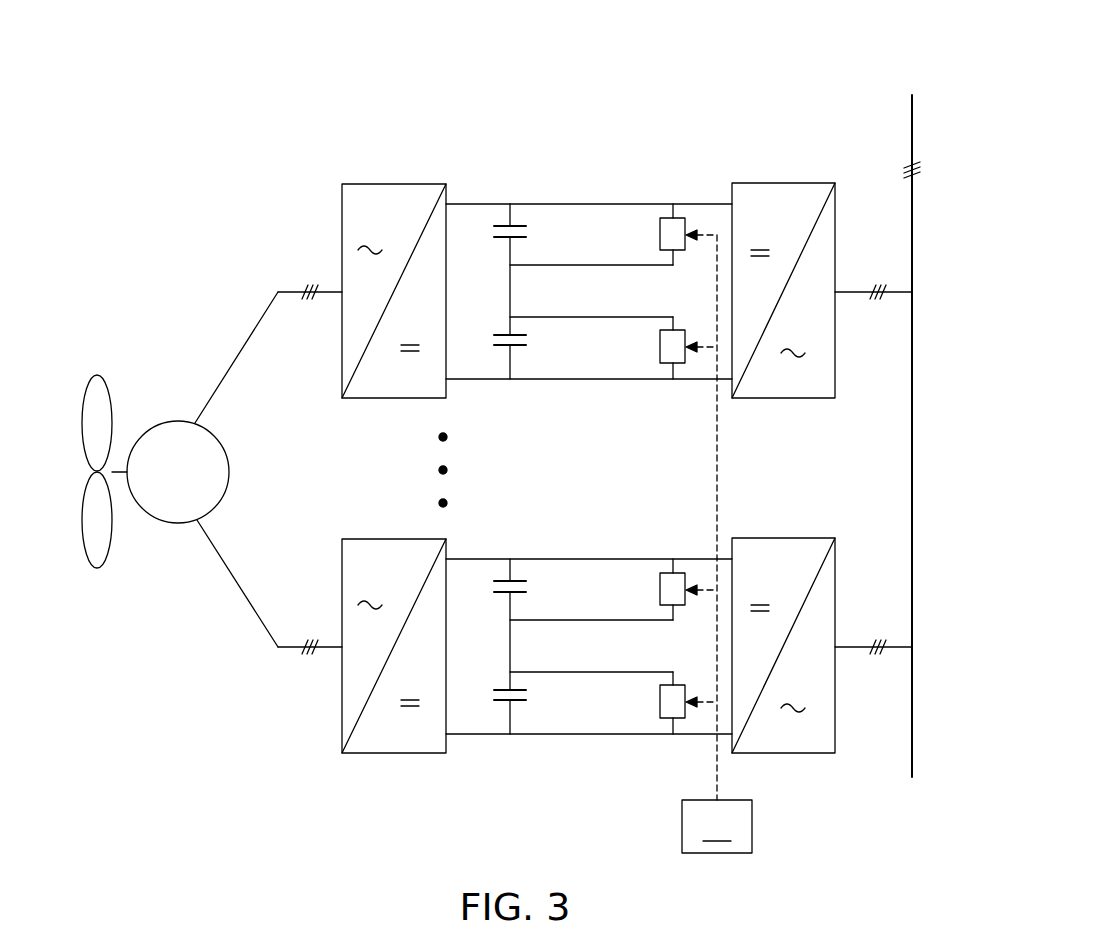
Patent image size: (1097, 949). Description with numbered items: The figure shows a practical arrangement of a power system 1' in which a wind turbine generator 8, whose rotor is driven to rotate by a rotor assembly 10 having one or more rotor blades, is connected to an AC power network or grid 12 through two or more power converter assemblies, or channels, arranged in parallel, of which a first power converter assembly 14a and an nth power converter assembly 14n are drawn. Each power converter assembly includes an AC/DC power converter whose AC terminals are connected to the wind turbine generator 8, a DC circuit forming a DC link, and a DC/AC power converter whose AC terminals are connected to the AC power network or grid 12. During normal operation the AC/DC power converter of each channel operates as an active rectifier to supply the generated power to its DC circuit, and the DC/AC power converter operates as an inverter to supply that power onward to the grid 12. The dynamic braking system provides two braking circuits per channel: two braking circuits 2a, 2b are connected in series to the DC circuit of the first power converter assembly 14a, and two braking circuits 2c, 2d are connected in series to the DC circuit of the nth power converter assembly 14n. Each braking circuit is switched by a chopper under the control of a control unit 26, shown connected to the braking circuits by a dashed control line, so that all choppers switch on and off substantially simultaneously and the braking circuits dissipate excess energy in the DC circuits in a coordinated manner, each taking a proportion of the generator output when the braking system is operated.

The power system 1' is at (497, 443).
The wind turbine generator 8 is at (170, 421).
The rotor assembly 10 is at (97, 375).
The AC power network or grid 12 is at (912, 118).
The first power converter assembly 14a is at (595, 240).
The nth power converter assembly 14n is at (595, 675).
The braking circuit 2a is at (673, 216).
The braking circuit 2b is at (673, 365).
The braking circuit 2c is at (673, 571).
The braking circuit 2d is at (673, 720).
The control unit 26 is at (717, 544).